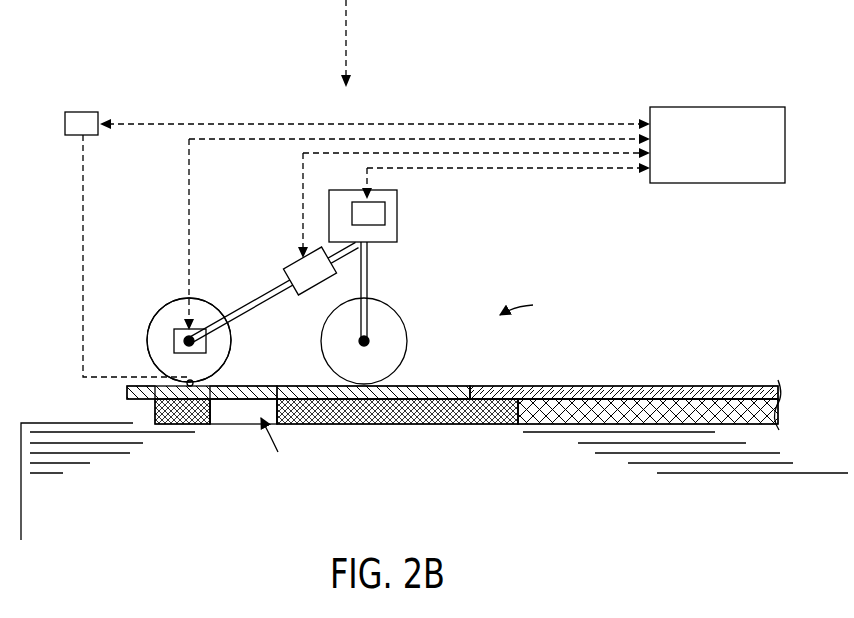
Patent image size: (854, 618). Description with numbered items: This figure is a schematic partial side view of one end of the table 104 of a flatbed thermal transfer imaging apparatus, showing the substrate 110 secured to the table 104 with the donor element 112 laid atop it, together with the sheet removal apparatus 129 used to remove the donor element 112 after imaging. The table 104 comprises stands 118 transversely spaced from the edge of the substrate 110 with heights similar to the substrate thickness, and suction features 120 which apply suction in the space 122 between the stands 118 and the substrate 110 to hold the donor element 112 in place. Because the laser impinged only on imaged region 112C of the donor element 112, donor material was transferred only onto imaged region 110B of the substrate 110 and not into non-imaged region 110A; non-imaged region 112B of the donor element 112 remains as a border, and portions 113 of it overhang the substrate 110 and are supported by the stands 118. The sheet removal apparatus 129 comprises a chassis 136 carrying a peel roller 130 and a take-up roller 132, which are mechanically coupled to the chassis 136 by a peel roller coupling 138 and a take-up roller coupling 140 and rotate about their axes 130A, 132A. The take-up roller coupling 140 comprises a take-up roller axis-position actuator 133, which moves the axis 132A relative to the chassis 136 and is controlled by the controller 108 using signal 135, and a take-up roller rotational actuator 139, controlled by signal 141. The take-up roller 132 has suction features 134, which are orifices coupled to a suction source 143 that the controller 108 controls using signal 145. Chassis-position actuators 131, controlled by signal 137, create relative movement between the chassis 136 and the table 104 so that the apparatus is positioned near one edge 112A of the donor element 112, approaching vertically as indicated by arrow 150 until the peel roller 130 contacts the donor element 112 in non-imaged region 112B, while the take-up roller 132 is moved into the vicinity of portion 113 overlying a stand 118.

The table 104 is at (412, 416).
The controller 108 is at (716, 118).
The substrate 110 is at (572, 415).
The non-imaged region of substrate 110A is at (443, 418).
The imaged region of substrate 110B is at (572, 415).
The donor element 112 is at (575, 387).
The edge of donor element 112A is at (127, 392).
The non-imaged region of donor element 112B is at (303, 393).
The imaged region of donor element 112C is at (575, 387).
The portion of non-imaged region 113 is at (222, 393).
The stand 118 is at (175, 418).
The suction feature 120 is at (253, 423).
The space 122 is at (277, 447).
The sheet removal apparatus 129 is at (531, 308).
The peel roller 130 is at (398, 312).
The axis of peel roller 130A is at (370, 343).
The chassis-position actuator 131 is at (358, 213).
The take-up roller 132 is at (178, 310).
The axis of take-up roller 132A is at (160, 322).
The take-up roller axis-position actuator 133 is at (296, 270).
The suction feature 134 is at (190, 380).
The signal 135 is at (490, 153).
The chassis 136 is at (398, 212).
The signal 137 is at (582, 170).
The peel roller coupling 138 is at (368, 284).
The take-up roller rotational actuator 139 is at (206, 352).
The take-up roller coupling 140 is at (258, 300).
The signal 141 is at (432, 139).
The suction source 143 is at (82, 125).
The signal 145 is at (212, 124).
The arrow 150 is at (348, 45).